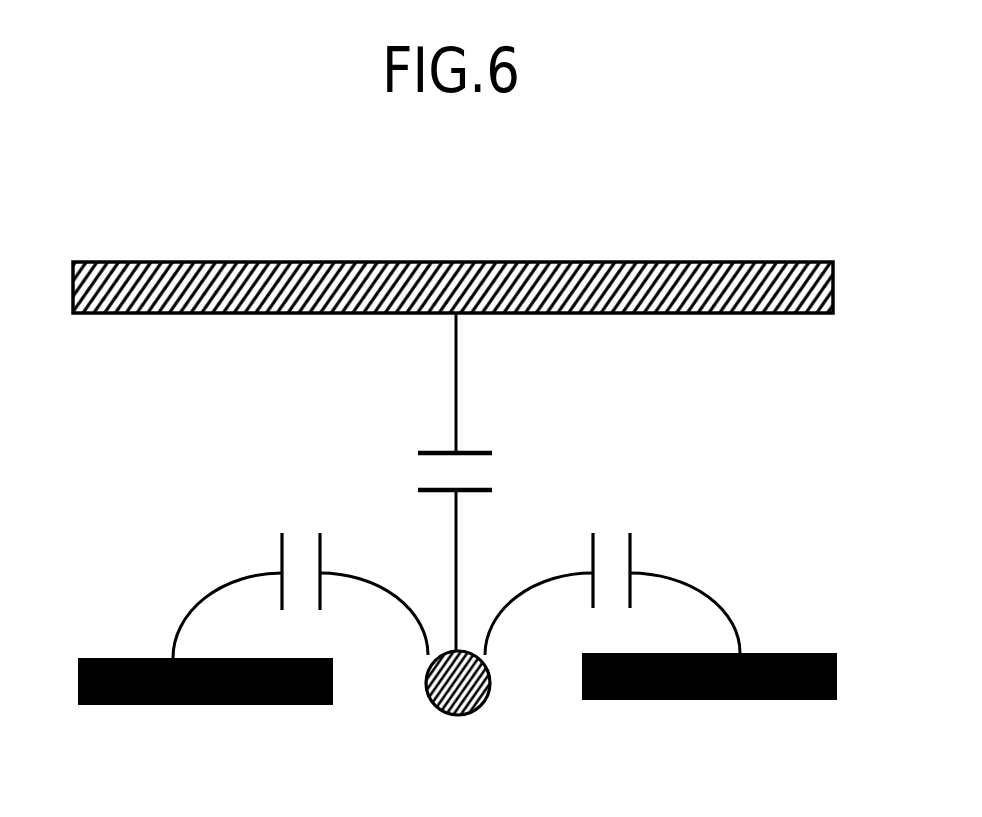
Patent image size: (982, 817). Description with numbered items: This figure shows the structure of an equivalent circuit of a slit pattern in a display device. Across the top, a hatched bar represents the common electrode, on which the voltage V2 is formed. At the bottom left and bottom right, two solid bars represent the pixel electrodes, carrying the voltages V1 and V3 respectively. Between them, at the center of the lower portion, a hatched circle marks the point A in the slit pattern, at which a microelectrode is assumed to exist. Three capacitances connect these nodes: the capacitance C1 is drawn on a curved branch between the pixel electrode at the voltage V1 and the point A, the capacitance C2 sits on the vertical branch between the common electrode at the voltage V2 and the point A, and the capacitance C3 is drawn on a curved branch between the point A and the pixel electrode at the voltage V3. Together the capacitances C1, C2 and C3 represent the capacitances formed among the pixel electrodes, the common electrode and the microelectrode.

The voltage formed on the common electrode V2 is at (493, 284).
The capacitance C2 is at (470, 482).
The capacitance C1 is at (300, 564).
The capacitance C3 is at (612, 561).
The voltage formed on the pixel electrodes V1 is at (171, 677).
The voltage formed on the pixel electrodes V3 is at (743, 674).
The A point A is at (465, 698).